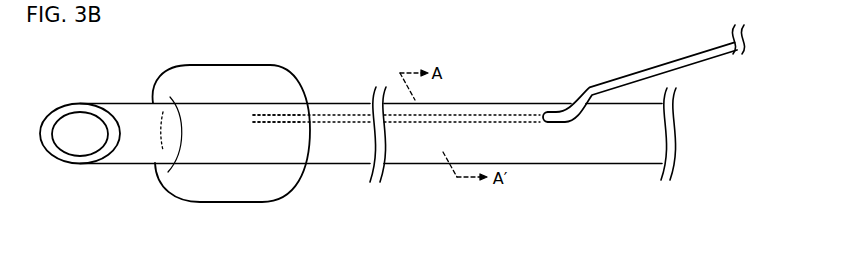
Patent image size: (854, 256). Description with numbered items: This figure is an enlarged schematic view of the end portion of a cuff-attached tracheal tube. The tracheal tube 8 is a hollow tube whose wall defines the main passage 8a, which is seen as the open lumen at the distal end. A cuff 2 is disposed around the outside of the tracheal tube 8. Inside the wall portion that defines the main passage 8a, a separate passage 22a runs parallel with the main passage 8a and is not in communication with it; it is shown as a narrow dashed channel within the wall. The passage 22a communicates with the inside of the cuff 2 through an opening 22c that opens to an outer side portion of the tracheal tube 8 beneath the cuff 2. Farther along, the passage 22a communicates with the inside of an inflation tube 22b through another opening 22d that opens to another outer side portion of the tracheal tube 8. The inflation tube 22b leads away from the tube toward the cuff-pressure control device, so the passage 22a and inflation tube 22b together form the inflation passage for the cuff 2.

The cuff 2 is at (258, 64).
The tracheal tube 8 is at (587, 164).
The main passage 8a is at (80, 136).
The passage 22a is at (494, 116).
The inflation tube 22b is at (680, 50).
The opening 22c is at (254, 116).
The opening 22d is at (545, 112).